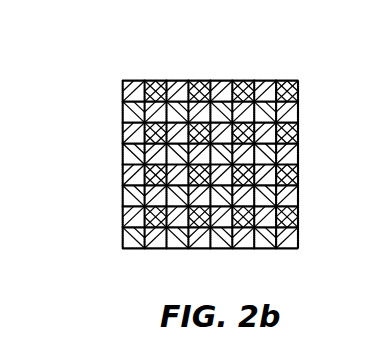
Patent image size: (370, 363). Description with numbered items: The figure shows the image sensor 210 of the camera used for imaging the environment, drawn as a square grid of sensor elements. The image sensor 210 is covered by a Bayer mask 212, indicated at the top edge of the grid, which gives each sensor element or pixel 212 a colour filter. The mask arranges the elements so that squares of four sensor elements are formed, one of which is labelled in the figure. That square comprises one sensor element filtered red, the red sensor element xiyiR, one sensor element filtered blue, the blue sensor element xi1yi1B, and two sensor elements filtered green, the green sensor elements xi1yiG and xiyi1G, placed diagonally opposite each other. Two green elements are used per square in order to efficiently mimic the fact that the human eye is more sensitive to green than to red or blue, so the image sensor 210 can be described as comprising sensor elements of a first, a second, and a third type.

The image sensor 210 is at (298, 81).
The Bayer mask 212 is at (266, 81).
The red-filtered sensor element (xi, yi)R xiyiR is at (199, 126).
The green-filtered sensor element (xi-1, yi)G xi1yiG is at (176, 128).
The green-filtered sensor element (xi, yi-1)G xiyi1G is at (192, 158).
The blue-filtered sensor element (xi-1, yi-1)B xi1yi1B is at (178, 155).